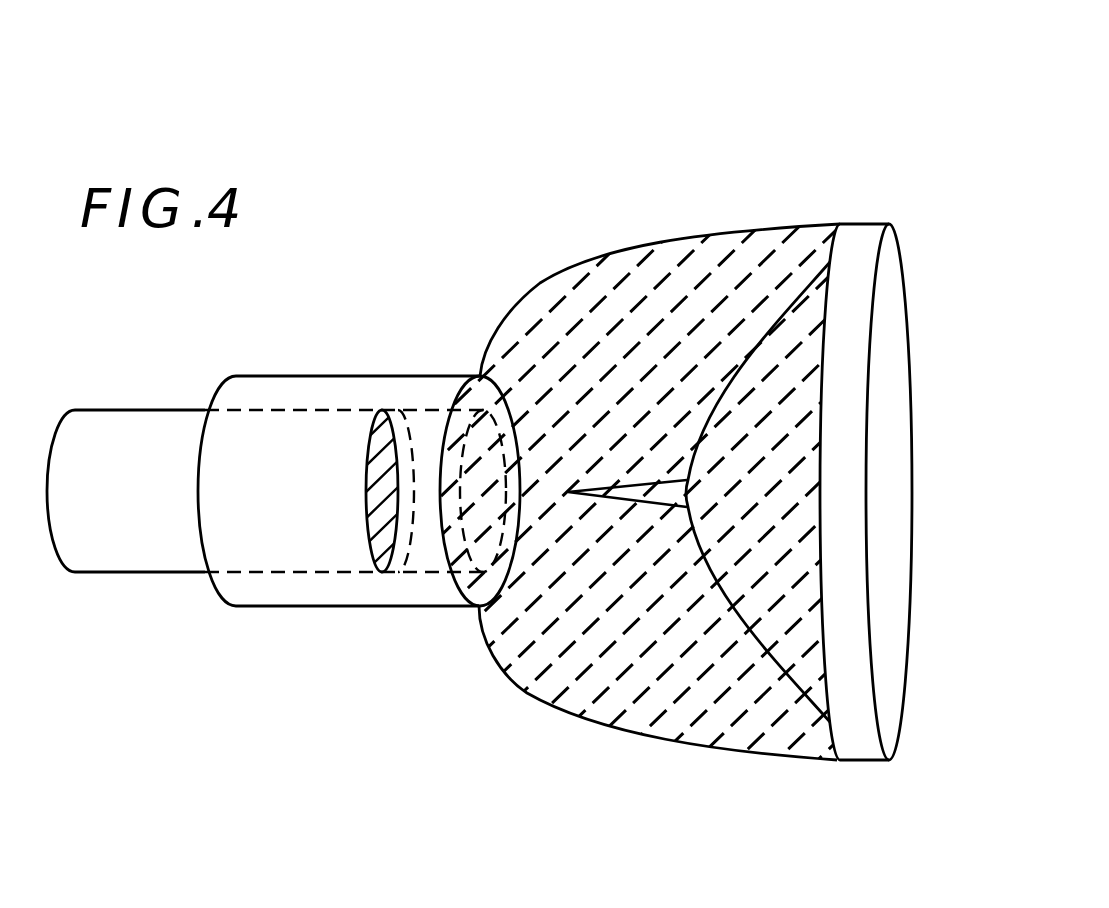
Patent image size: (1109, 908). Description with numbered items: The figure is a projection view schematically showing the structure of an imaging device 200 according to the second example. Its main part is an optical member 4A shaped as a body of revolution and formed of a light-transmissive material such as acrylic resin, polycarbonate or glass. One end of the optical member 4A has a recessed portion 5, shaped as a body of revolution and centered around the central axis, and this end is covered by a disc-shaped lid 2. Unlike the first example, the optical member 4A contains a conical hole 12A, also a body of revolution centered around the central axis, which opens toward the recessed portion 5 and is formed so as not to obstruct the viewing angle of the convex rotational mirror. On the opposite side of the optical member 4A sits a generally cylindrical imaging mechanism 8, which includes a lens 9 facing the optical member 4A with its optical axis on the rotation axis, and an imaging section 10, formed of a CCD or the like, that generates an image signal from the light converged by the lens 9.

The imaging device 200 is at (578, 451).
The optical member 4A is at (583, 552).
The lid 2 is at (872, 763).
The recessed portion 5 is at (712, 405).
The conical hole 12A is at (627, 340).
The imaging mechanism 8 is at (355, 660).
The lens 9 is at (370, 545).
The imaging section 10 is at (265, 544).